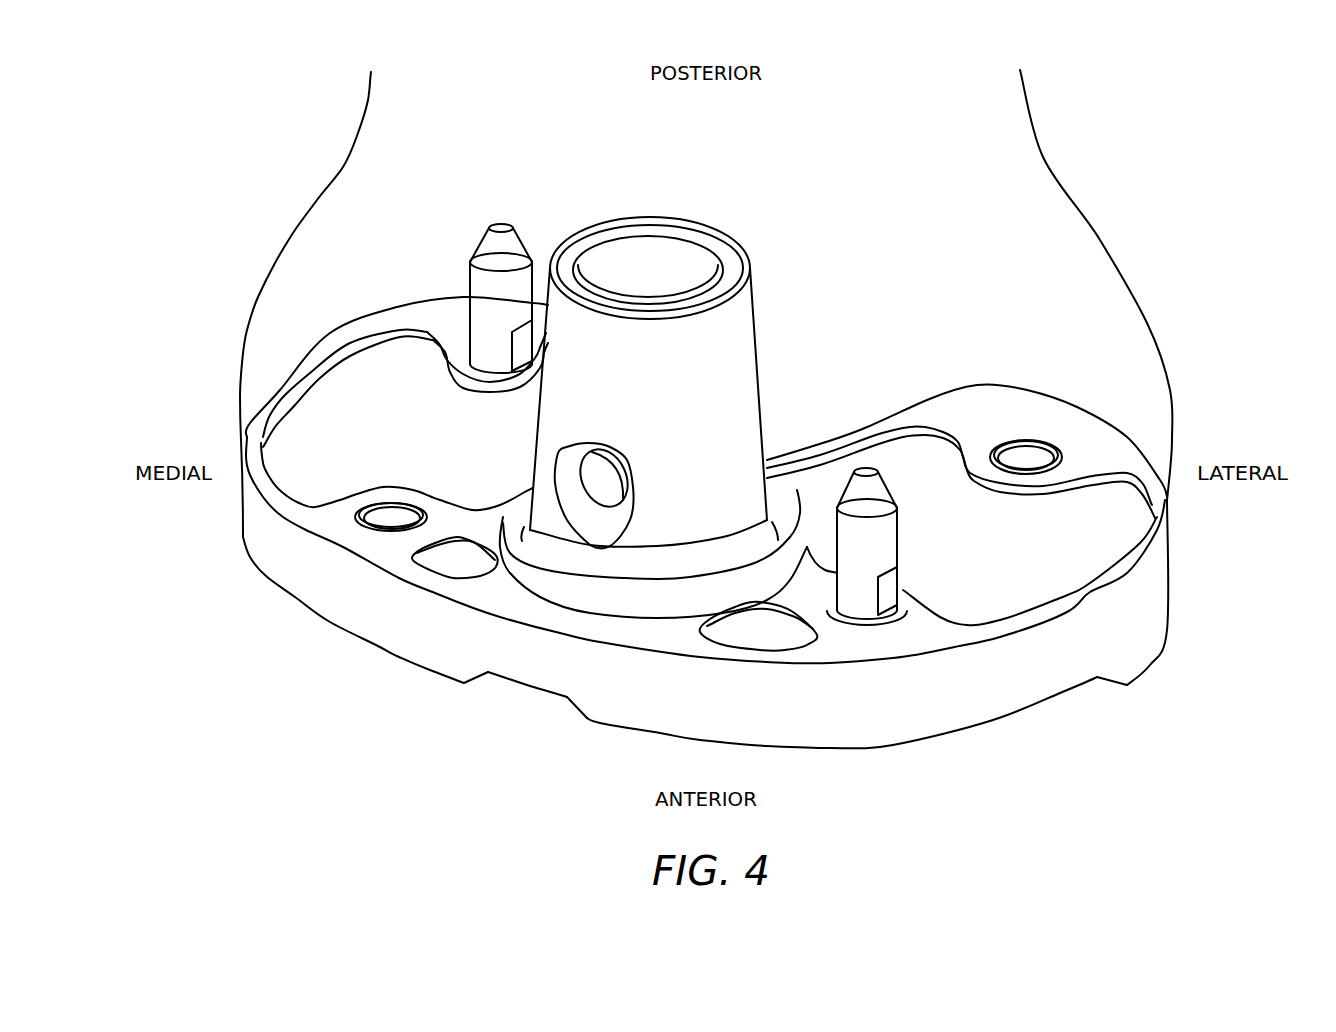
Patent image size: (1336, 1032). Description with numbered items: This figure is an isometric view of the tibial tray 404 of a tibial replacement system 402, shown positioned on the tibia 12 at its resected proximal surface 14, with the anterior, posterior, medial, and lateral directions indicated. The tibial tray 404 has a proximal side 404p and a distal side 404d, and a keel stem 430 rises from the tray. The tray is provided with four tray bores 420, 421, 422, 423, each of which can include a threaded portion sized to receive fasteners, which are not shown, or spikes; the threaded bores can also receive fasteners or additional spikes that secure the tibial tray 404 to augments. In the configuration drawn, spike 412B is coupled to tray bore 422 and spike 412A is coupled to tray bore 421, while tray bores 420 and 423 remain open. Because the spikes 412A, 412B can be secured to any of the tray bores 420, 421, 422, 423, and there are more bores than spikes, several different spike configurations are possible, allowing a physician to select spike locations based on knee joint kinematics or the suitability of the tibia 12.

The tibia 12 is at (1076, 266).
The resected proximal surface 14 is at (1157, 500).
The tibial replacement system 402 is at (245, 97).
The tibial tray 404 is at (203, 412).
The distal side 404d is at (303, 460).
The proximal side 404p is at (363, 643).
The spike 412A is at (898, 503).
The spike 412B is at (482, 247).
The tray bore 420 is at (391, 517).
The tray bore 421 is at (893, 608).
The tray bore 422 is at (470, 357).
The tray bore 423 is at (1027, 457).
The keel stem 430 is at (735, 368).